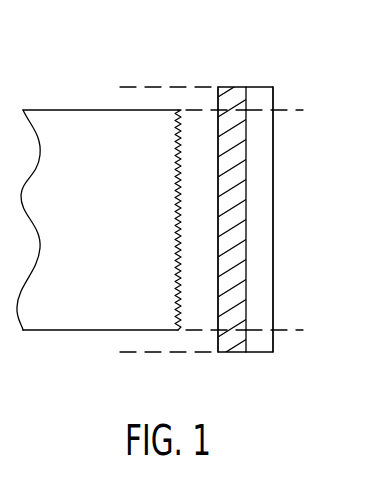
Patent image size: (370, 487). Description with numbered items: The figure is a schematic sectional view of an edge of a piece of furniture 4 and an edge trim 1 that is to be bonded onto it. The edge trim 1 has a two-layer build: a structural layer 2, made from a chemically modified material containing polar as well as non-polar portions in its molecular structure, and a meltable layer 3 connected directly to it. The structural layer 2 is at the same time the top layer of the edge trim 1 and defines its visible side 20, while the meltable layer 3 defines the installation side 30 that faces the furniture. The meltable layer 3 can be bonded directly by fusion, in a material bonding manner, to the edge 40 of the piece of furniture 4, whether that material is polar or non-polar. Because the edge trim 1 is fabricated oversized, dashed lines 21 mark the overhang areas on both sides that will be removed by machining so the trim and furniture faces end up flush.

The edge trim 1 is at (295, 63).
The structural layer 2 is at (265, 146).
The meltable layer 3 is at (224, 86).
The piece of furniture 4 is at (75, 95).
The visible side 20 is at (273, 267).
The dashed lines 21 is at (273, 110).
The installation side 30 is at (218, 302).
The edge 40 is at (178, 132).